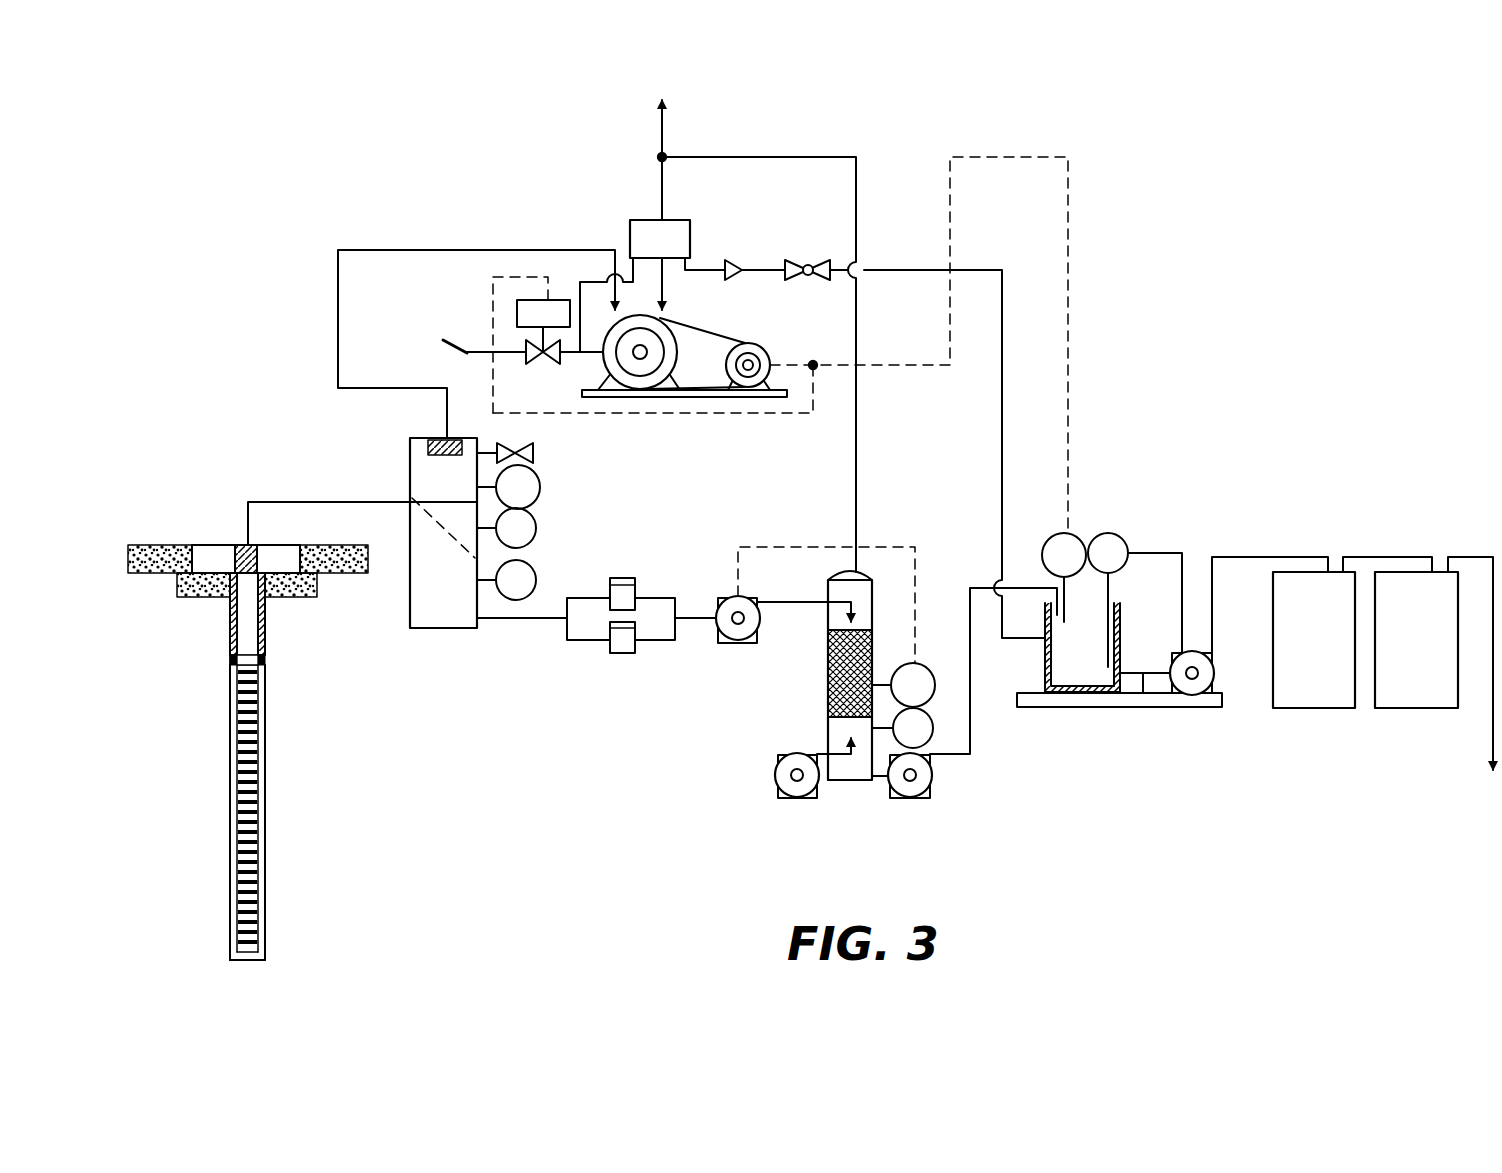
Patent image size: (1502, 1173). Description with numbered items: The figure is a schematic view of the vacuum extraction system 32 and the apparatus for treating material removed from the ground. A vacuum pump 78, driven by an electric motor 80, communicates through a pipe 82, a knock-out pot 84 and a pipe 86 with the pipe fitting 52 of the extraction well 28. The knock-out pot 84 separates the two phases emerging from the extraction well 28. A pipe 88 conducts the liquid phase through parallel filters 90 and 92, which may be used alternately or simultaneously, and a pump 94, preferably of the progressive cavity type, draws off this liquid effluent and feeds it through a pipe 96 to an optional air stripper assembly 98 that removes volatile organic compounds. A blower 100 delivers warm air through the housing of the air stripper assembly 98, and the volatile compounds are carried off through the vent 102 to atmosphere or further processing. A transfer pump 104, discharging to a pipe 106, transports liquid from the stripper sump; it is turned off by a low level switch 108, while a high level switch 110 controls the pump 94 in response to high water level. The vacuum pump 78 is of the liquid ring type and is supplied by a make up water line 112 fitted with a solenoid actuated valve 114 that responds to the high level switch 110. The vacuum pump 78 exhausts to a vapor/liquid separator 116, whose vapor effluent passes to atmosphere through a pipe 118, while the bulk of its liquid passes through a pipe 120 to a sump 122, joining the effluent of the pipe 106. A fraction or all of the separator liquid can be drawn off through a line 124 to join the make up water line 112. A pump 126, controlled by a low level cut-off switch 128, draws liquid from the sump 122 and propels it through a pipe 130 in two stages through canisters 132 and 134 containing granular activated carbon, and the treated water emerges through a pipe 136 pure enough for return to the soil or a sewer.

The extraction well 28 is at (282, 816).
The vacuum extraction system 32 is at (494, 668).
The pipe fitting 52 is at (240, 545).
The vacuum pump 78 is at (665, 350).
The electric motor 80 is at (772, 362).
The pipe 82 is at (430, 249).
The knock-out pot 84 is at (418, 438).
The pipe 86 is at (355, 501).
The pipe 88 is at (545, 620).
The filter 90 is at (625, 590).
The filter 92 is at (620, 645).
The pump 94 is at (728, 616).
The pipe 96 is at (790, 603).
The air stripper assembly 98 is at (830, 680).
The blower 100 is at (790, 775).
The vent 102 is at (857, 225).
The transfer pump 104 is at (912, 782).
The pipe 106 is at (972, 668).
The low level switch 108 is at (925, 736).
The high level switch 110 is at (925, 666).
The make up water line 112 is at (455, 345).
The solenoid actuated valve 114 is at (530, 348).
The vapor/liquid separator 116 is at (637, 222).
The pipe 118 is at (663, 198).
The pipe 120 is at (835, 266).
The sump 122 is at (1068, 668).
The line 124 is at (582, 280).
The pump 126 is at (1195, 682).
The low level cut-off switch 128 is at (1112, 547).
The pipe 130 is at (1245, 557).
The canister 132 is at (1318, 688).
The canister 134 is at (1415, 685).
The pipe 136 is at (1492, 715).